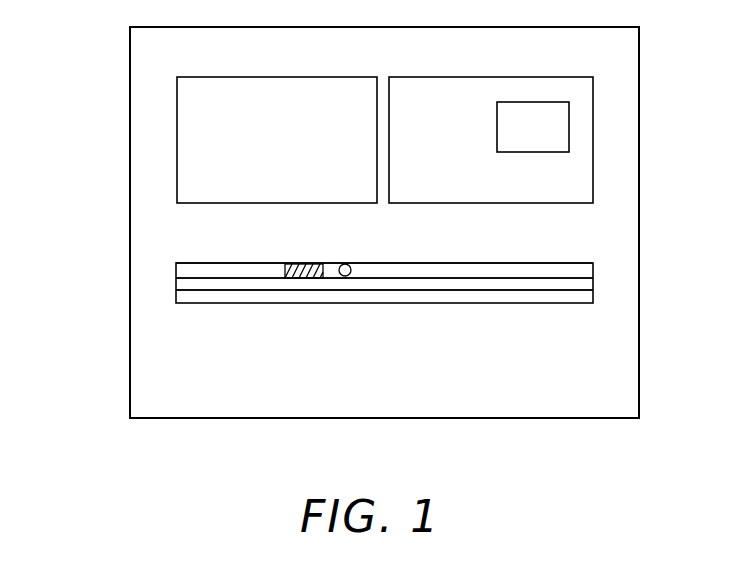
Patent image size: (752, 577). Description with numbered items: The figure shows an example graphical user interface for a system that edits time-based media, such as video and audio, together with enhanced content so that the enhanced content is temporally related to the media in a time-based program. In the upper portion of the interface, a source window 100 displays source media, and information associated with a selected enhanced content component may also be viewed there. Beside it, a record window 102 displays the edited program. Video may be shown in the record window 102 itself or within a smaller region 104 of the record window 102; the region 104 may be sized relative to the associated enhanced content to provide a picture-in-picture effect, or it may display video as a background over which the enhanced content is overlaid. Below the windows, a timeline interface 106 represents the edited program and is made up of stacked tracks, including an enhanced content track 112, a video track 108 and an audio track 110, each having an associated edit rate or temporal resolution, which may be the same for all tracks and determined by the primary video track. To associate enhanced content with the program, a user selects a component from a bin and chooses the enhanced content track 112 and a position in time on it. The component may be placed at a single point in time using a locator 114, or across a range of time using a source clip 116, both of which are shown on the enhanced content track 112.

The source window 100 is at (266, 77).
The record window 102 is at (478, 77).
The region 104 is at (497, 127).
The timeline interface 106 is at (170, 278).
The video track 108 is at (594, 277).
The audio track 110 is at (594, 292).
The enhanced content track 112 is at (594, 262).
The locator 114 is at (345, 263).
The source clip 116 is at (295, 266).